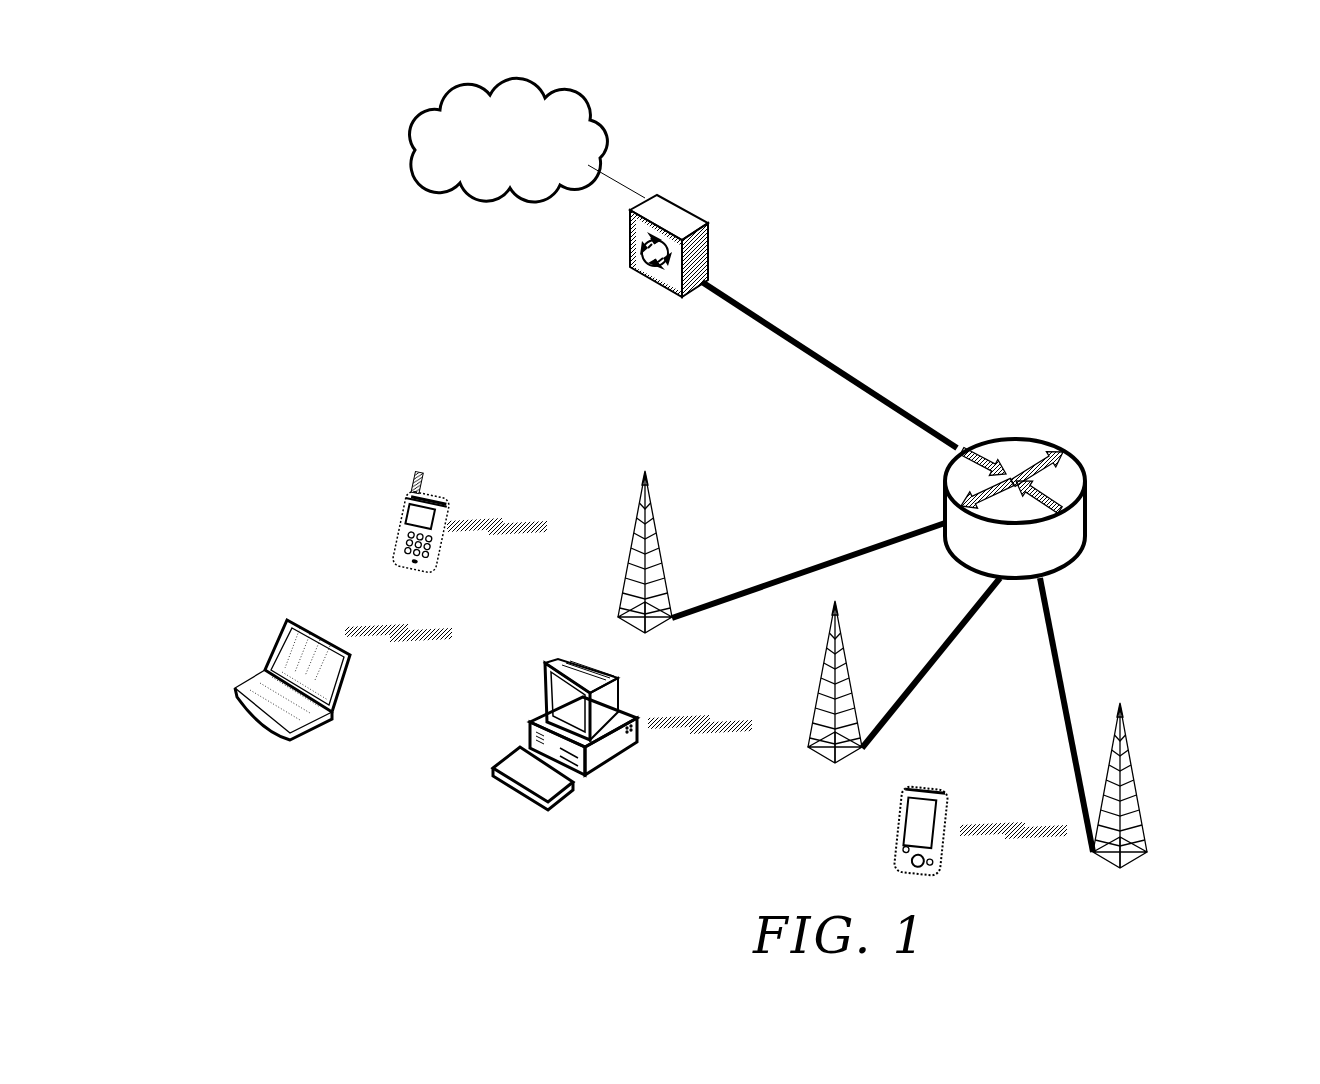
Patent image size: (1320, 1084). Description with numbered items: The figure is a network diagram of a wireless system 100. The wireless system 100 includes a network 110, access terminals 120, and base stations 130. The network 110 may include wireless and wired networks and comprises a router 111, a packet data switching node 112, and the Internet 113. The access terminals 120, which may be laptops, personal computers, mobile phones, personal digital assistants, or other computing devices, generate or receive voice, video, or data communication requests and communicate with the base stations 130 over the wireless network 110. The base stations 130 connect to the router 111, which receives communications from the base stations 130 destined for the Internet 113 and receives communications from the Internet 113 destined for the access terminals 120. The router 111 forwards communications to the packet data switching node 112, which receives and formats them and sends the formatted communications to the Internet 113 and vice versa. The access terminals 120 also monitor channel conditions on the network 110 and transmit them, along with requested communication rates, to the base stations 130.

The wireless system 100 is at (1182, 143).
The network 110 is at (848, 374).
The router 111 is at (1037, 439).
The packet data switching node 112 is at (702, 213).
The Internet 113 is at (509, 140).
The access terminals 120 is at (407, 477).
The base stations 130 is at (657, 532).